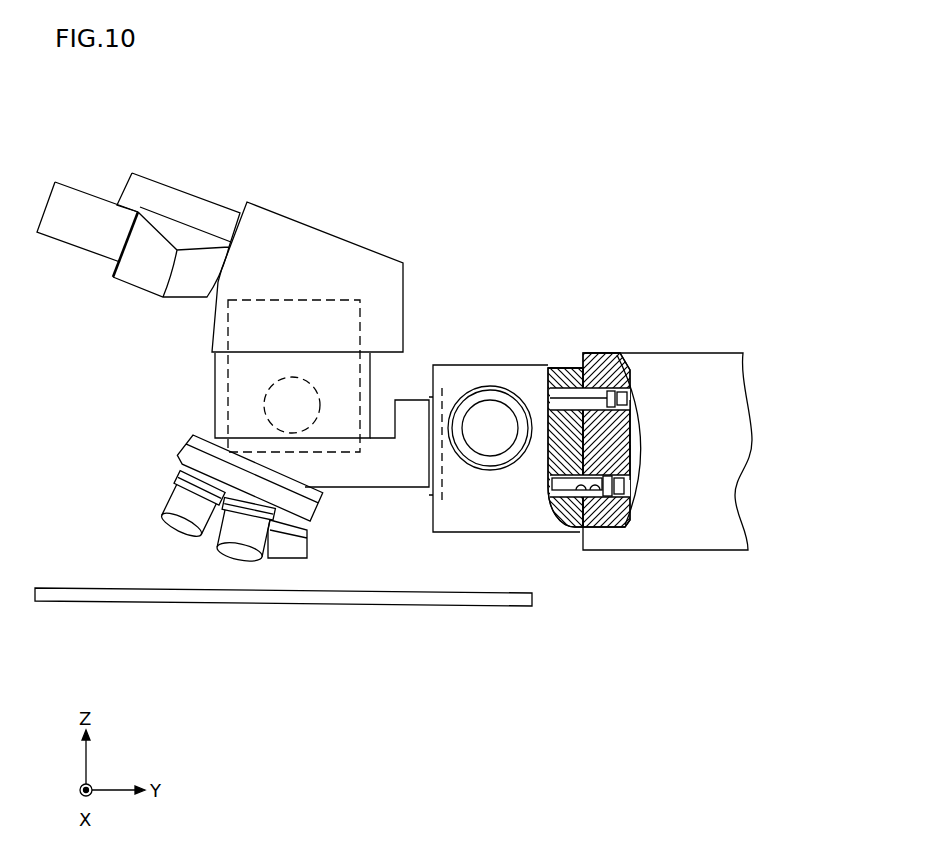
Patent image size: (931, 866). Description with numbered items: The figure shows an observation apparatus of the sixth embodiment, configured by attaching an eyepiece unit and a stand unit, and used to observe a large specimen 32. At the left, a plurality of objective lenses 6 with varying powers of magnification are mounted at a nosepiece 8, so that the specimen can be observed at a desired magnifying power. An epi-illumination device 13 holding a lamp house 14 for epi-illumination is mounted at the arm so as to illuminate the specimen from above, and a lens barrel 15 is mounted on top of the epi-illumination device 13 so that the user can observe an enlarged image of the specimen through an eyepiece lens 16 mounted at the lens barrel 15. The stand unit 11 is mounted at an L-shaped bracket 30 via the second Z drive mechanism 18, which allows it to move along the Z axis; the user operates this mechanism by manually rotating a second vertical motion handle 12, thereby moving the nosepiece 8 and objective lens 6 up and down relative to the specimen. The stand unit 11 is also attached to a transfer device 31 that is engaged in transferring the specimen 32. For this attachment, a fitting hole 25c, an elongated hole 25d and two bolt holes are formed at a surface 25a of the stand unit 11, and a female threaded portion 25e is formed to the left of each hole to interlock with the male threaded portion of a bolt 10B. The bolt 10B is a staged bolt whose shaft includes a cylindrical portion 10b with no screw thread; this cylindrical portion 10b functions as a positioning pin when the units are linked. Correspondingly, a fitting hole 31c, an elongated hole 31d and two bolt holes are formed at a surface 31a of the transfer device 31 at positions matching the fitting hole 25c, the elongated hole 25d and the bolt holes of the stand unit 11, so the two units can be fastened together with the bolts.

The objective lens 6 is at (168, 498).
The nosepiece 8 is at (180, 445).
The bolt 10B is at (640, 390).
The cylindrical portion 10b is at (630, 460).
The stand unit 11 is at (448, 364).
The second vertical motion handle 12 is at (488, 386).
The epi-illumination device 13 is at (215, 372).
The lamp house 14 is at (322, 298).
The lens barrel 15 is at (264, 202).
The eyepiece lens 16 is at (78, 190).
The second Z drive mechanism 18 is at (432, 522).
The surface 25a is at (627, 445).
The fitting hole 25c is at (575, 528).
The elongated hole 25d is at (578, 387).
The female threaded portion 25e is at (553, 366).
The L-shaped bracket 30 is at (380, 490).
The transfer device 31 is at (748, 527).
The surface 31a is at (640, 427).
The fitting hole 31c is at (600, 528).
The elongated hole 31d is at (605, 386).
The specimen 32 is at (55, 601).